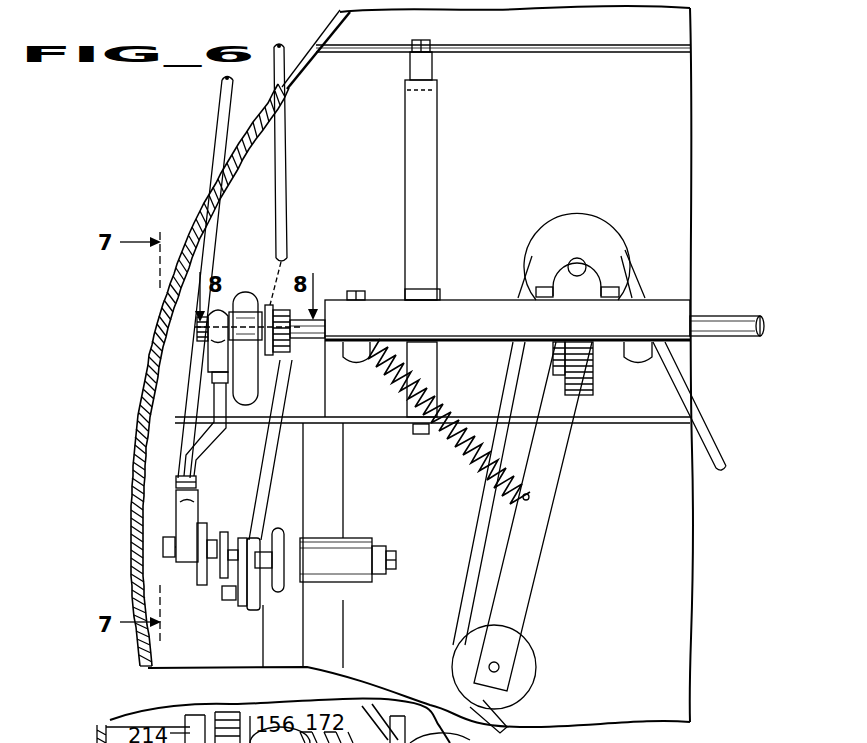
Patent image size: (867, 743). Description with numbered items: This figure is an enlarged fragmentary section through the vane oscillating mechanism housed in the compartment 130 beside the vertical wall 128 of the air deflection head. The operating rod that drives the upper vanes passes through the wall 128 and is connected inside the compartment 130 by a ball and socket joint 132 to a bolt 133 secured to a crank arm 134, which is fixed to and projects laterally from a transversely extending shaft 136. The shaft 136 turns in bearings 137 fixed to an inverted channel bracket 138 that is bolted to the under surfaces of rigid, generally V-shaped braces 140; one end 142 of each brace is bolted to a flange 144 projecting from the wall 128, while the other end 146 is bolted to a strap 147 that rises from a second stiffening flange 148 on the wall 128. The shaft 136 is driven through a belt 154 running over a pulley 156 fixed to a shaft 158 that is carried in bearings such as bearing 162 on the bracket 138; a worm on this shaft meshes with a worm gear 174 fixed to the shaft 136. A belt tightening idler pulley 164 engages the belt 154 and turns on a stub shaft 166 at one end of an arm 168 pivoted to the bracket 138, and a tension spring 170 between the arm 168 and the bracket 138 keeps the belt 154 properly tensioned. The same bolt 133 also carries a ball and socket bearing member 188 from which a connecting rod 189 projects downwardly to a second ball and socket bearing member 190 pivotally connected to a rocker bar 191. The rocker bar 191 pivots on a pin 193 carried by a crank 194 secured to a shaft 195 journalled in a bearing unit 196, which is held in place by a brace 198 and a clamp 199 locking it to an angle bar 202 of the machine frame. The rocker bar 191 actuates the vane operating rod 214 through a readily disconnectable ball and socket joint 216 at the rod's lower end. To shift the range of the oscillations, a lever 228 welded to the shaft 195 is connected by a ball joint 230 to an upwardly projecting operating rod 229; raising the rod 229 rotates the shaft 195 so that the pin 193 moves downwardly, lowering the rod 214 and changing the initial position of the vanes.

The vertical wall 128 is at (352, 247).
The compartment 130 is at (130, 452).
The ball and socket joint 132 is at (246, 320).
The bolt 133 is at (200, 334).
The crank arm 134 is at (275, 306).
The shaft 136 is at (736, 326).
The bearings 137 is at (352, 352).
The inverted channel bracket 138 is at (523, 330).
The brace 140 is at (425, 170).
The end of brace 142 is at (430, 92).
The flange 144 is at (598, 52).
The end of brace 146 is at (426, 292).
The strap 147 is at (425, 360).
The stiffening flange 148 is at (378, 426).
The belt 154 is at (711, 436).
The pulley 156 is at (586, 222).
The shaft 158 is at (580, 268).
The bearing 162 is at (590, 278).
The belt tightening idler pulley 164 is at (522, 657).
The stub shaft 166 is at (500, 667).
The arm 168 is at (527, 551).
The tension spring 170 is at (474, 447).
The worm gear 174 is at (595, 392).
The ball and socket bearing member 188 is at (210, 357).
The connecting rod 189 is at (199, 462).
The ball and socket bearing member 190 is at (178, 513).
The rocker bar 191 is at (200, 576).
The pin 193 is at (224, 572).
The crank 194 is at (238, 513).
The shaft 195 is at (396, 560).
The bearing unit 196 is at (360, 548).
The brace 198 is at (322, 482).
The clamp 199 is at (357, 570).
The angle bar 202 is at (284, 633).
The vane operating rod 214 is at (217, 137).
The ball and socket joint 216 is at (180, 566).
The lever 228 is at (248, 612).
The operating rod 229 is at (289, 150).
The ball joint 230 is at (262, 607).